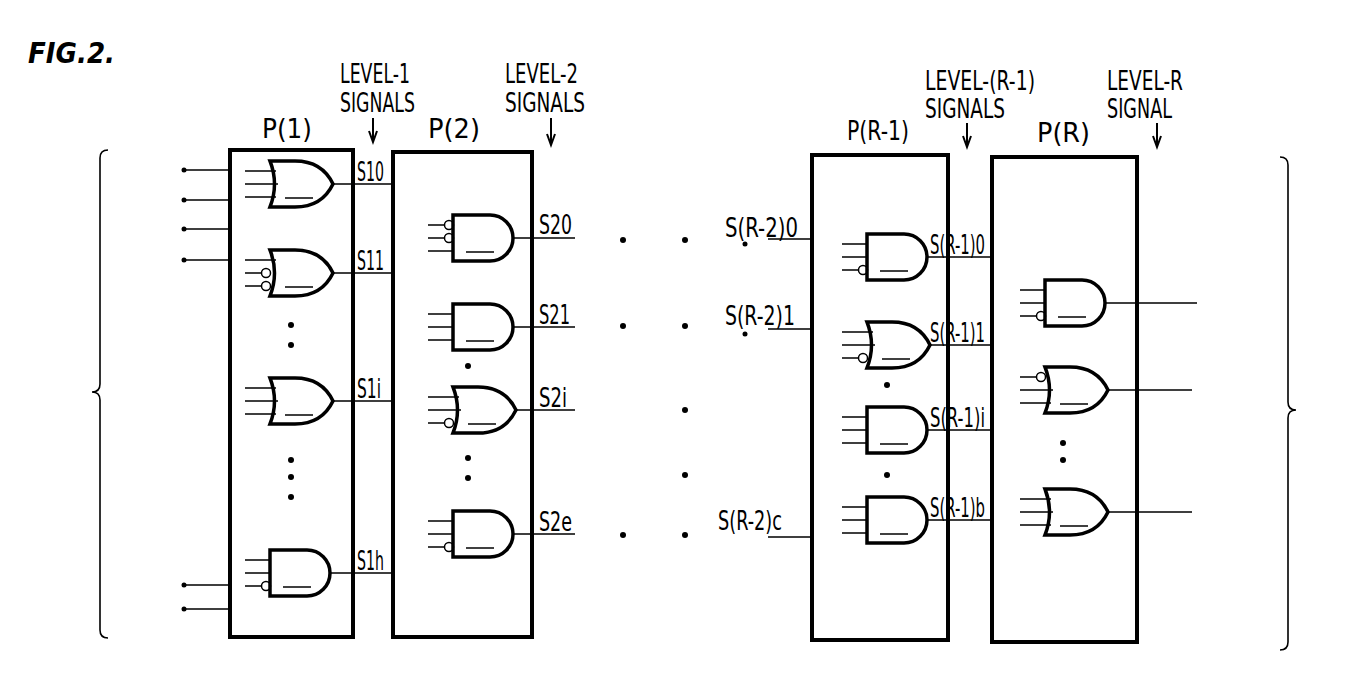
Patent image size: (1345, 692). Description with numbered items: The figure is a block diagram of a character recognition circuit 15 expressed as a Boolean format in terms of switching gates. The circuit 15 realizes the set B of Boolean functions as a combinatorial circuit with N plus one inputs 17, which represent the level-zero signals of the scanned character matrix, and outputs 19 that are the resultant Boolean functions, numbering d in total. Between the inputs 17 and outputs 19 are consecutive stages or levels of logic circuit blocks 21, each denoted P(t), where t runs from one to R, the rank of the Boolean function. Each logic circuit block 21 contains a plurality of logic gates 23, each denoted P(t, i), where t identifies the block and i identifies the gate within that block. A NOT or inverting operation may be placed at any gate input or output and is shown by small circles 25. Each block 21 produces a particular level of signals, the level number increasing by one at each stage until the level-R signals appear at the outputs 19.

The character recognition circuit 15 is at (652, 106).
The inputs 17 is at (145, 379).
The outputs 19 is at (1230, 403).
The logic circuit block 21 is at (230, 151).
The logic gate 23 is at (721, 378).
The small circle 25 is at (262, 289).